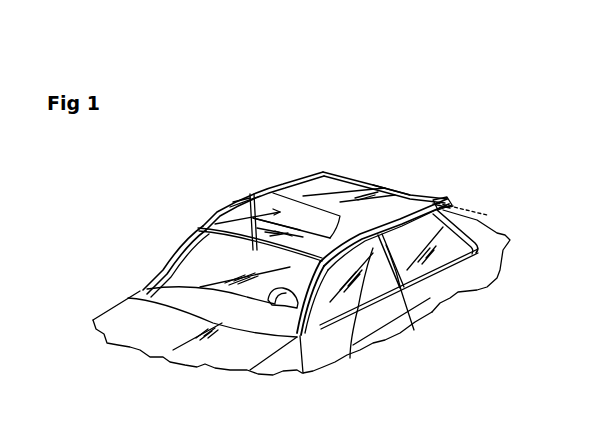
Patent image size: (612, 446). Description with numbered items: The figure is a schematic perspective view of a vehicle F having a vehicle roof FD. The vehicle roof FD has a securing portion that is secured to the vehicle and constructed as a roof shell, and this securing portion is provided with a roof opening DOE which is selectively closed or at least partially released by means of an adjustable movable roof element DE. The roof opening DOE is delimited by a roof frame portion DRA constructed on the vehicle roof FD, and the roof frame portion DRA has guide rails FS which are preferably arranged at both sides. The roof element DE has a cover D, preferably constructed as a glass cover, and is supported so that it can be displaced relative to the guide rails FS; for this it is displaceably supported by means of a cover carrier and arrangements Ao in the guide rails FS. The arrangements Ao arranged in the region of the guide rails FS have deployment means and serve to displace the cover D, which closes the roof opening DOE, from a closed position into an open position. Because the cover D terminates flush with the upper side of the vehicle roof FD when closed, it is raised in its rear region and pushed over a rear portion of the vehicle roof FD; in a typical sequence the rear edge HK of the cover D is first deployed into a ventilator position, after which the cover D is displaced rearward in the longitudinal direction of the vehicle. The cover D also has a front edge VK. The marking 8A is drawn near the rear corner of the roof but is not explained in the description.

The vehicle roof FD is at (282, 183).
The cover D is at (340, 187).
The roof opening DOE is at (198, 230).
The roof element DE is at (247, 178).
The rear edge HK is at (393, 183).
The front edge VK is at (357, 215).
The guide rails FS is at (230, 207).
The roof frame portion DRA is at (416, 316).
The arrangements Ao is at (233, 202).
The corner element 8A is at (437, 203).
The vehicle F is at (497, 124).